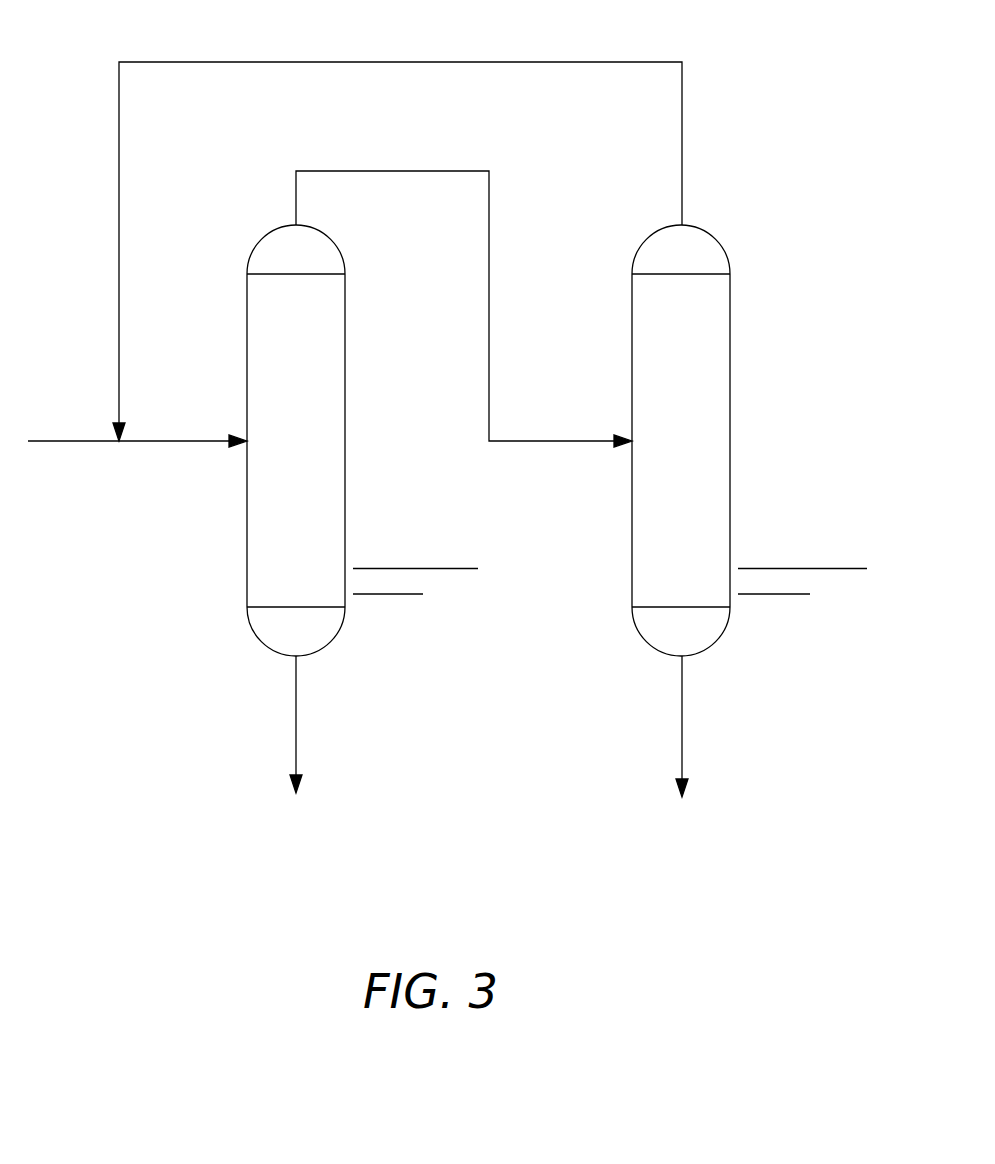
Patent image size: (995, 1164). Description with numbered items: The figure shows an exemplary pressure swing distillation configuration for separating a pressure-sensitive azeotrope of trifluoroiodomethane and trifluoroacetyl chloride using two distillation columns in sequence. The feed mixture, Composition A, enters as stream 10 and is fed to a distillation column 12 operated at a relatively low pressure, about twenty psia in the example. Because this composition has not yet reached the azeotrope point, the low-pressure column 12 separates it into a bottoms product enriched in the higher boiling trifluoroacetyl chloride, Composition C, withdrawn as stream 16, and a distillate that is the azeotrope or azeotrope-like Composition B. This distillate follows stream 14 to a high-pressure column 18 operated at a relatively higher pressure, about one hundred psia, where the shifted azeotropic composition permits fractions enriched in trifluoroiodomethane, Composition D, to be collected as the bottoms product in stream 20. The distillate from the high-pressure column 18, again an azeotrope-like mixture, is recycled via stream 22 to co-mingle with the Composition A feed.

The stream 10 is at (181, 441).
The distillation column 12 is at (332, 243).
The stream 14 is at (489, 305).
The stream 16 is at (297, 702).
The high-pressure column 18 is at (719, 245).
The stream 20 is at (682, 724).
The stream 22 is at (401, 62).